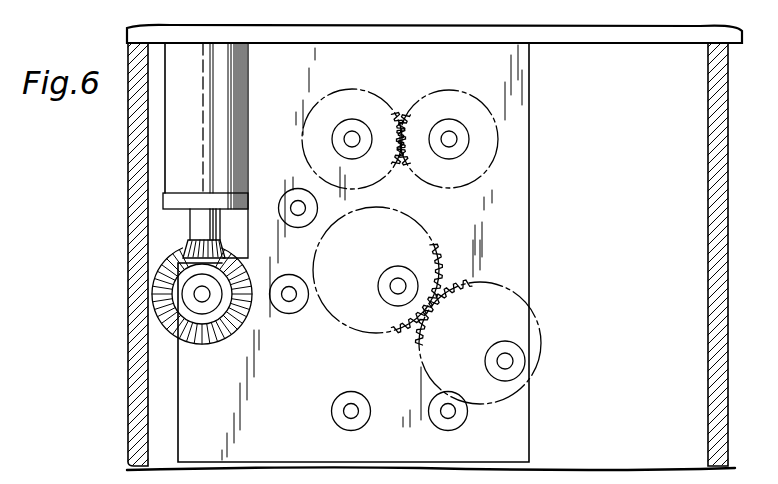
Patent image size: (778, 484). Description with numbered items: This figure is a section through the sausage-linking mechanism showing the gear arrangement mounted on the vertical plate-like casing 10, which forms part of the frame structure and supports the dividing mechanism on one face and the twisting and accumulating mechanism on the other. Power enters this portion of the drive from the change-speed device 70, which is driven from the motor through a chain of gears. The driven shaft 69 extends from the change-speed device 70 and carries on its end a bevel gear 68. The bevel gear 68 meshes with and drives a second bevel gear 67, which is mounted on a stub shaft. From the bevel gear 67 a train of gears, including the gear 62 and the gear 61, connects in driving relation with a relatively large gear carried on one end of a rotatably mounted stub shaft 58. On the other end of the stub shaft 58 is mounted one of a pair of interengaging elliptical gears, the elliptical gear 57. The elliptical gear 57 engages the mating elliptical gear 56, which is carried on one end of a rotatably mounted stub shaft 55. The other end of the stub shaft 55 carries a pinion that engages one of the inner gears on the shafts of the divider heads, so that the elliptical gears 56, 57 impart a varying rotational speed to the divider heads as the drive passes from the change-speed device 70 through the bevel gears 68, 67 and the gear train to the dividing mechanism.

The casing 10 is at (652, 43).
The stub shaft 55 is at (505, 361).
The elliptical gear 56 is at (531, 347).
The elliptical gear 57 is at (430, 250).
The stub shaft 58 is at (398, 286).
The gear 61 is at (468, 95).
The gear 62 is at (357, 93).
The bevel gear 67 is at (152, 295).
The bevel gear 68 is at (192, 243).
The driven shaft 69 is at (197, 218).
The change-speed device 70 is at (232, 76).